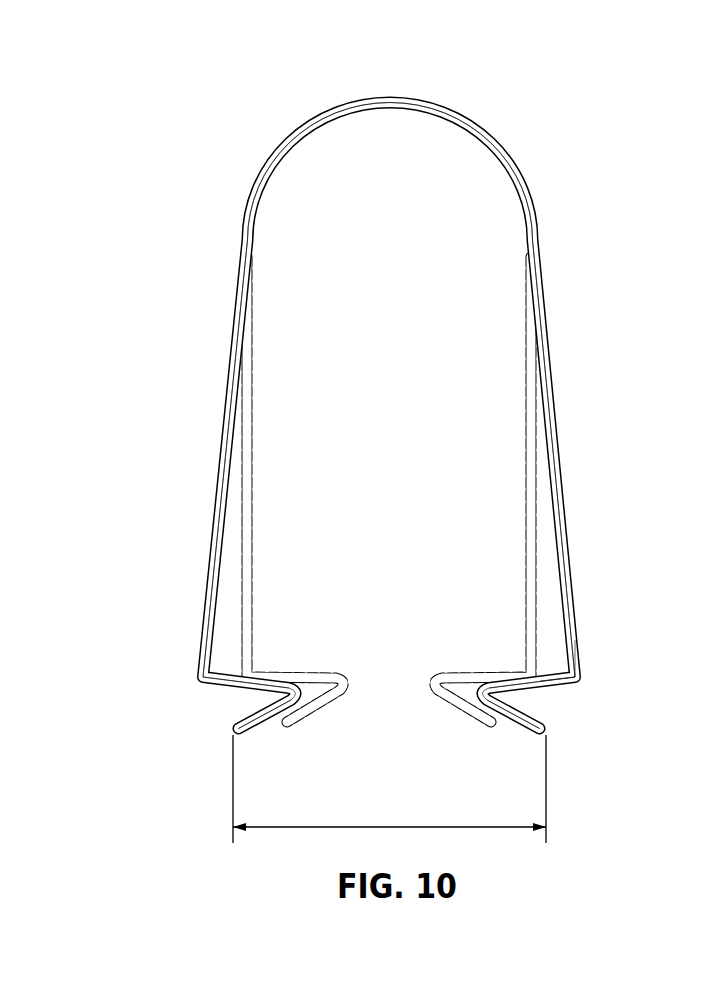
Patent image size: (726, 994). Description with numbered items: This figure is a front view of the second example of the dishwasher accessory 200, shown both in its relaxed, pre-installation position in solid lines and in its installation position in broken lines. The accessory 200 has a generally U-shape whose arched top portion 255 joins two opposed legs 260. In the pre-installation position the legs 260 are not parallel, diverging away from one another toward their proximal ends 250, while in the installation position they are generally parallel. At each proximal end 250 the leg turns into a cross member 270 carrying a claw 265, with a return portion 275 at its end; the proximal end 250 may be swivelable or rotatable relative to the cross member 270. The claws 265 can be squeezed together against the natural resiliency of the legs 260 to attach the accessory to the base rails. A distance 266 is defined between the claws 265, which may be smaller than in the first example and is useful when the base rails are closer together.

The dishwasher accessory 200 is at (221, 162).
The arcuate top portion 255 is at (398, 104).
The opposed legs 260 is at (548, 422).
The proximal end 250 is at (585, 675).
The cross member 270 is at (545, 684).
The return tab 275 is at (520, 720).
The claws 265 is at (482, 660).
The distance between the claws 266 is at (380, 827).